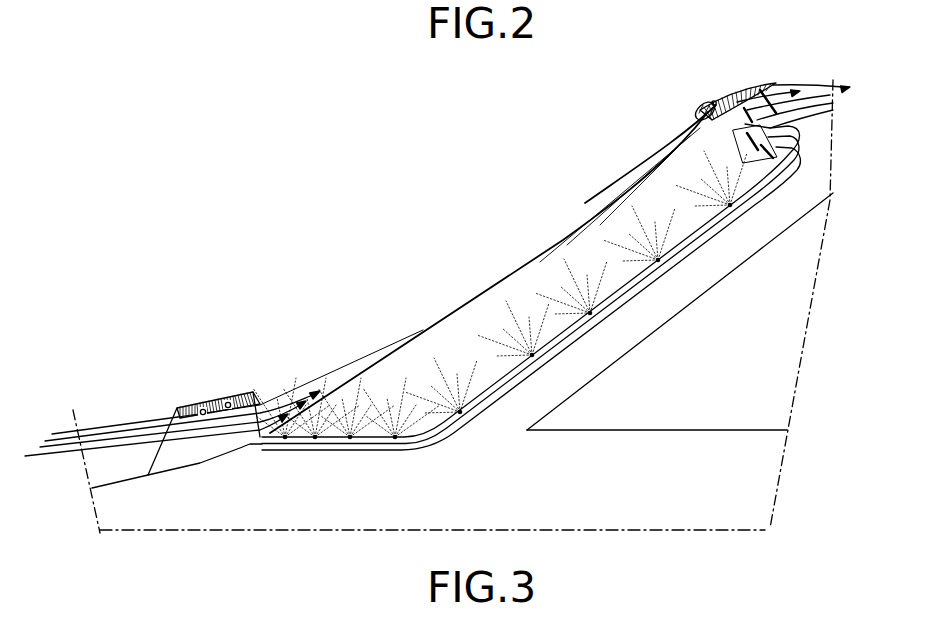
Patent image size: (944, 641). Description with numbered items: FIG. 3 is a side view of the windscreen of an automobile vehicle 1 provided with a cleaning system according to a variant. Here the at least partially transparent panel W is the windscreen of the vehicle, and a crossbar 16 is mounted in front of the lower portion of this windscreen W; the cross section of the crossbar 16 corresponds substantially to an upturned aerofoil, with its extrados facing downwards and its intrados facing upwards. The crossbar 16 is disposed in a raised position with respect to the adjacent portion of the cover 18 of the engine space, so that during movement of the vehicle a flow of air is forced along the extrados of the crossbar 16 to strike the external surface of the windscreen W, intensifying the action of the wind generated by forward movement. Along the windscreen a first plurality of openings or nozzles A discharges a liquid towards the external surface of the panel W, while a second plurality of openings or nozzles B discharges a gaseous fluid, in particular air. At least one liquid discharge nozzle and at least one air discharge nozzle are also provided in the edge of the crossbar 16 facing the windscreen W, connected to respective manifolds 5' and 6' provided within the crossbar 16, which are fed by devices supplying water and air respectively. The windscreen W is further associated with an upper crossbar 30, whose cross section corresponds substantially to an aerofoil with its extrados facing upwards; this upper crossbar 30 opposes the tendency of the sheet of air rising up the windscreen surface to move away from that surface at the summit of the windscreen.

The automobile vehicle 1 is at (380, 250).
The crossbar 16 is at (217, 400).
The cover of the engine space 18 is at (110, 482).
The upper crossbar 30 is at (727, 97).
The manifold 5' is at (470, 228).
The manifold 6' is at (474, 220).
The windscreen W is at (563, 240).
The liquid discharge nozzles A is at (770, 128).
The air discharge nozzles B is at (797, 143).